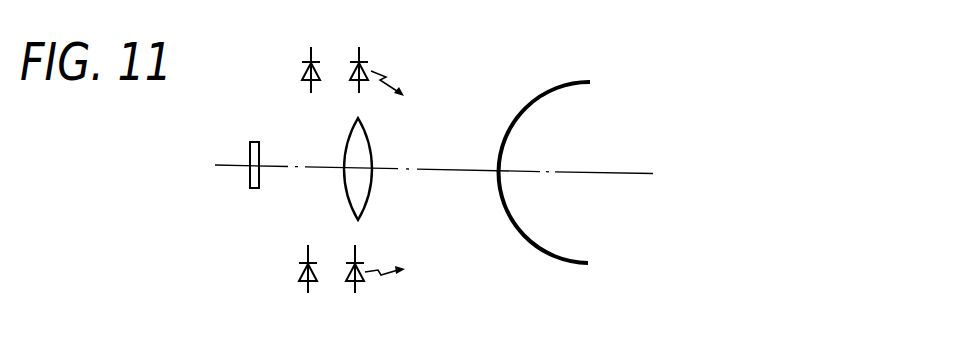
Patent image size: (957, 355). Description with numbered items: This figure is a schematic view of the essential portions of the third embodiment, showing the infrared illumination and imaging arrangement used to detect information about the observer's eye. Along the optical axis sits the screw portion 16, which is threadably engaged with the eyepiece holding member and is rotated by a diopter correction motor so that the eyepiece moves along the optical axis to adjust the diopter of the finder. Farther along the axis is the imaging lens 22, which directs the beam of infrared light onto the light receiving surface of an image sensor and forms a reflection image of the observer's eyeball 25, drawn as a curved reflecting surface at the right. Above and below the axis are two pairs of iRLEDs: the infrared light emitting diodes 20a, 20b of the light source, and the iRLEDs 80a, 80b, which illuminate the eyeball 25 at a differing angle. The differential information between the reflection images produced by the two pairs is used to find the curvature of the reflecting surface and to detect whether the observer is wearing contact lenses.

The screw portion 16 is at (250, 180).
The imaging lens 22 is at (369, 197).
The observer's eyeball 25 is at (548, 253).
The iRLED 80a is at (300, 268).
The iRLED 80b is at (308, 59).
The infrared light emitting diode 20a is at (347, 269).
The infrared light emitting diode 20b is at (365, 55).